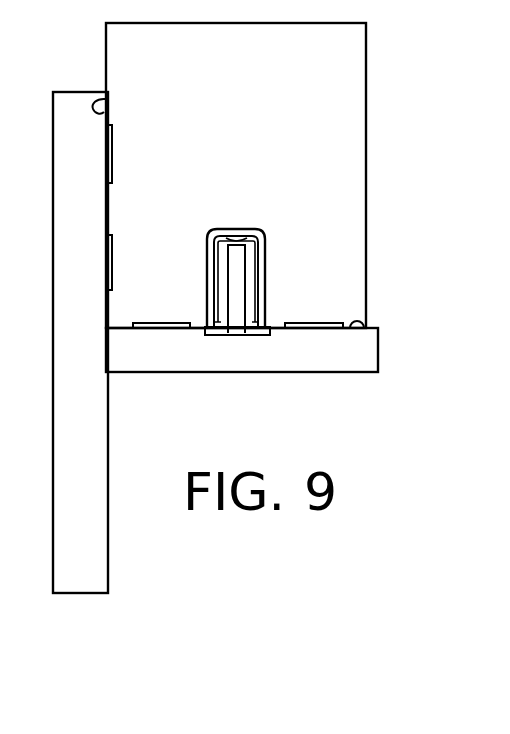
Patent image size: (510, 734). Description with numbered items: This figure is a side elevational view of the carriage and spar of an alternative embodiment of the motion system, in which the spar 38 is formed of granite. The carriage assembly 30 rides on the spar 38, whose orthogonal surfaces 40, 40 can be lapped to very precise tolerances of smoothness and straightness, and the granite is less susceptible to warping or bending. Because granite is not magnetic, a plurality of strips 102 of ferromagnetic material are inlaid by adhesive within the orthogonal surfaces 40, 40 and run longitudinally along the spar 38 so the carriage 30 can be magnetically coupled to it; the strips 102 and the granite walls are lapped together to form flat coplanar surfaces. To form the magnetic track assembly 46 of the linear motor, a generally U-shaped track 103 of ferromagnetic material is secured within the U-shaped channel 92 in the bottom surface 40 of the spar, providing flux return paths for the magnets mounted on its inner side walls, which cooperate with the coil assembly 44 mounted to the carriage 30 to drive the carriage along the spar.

The carriage assembly 30 is at (218, 357).
The spar 38 is at (308, 113).
The orthogonal surface 40 is at (104, 112).
The coil assembly 44 is at (235, 285).
The magnetic track assembly 46 is at (278, 228).
The U-shaped channel 92 is at (208, 285).
The strips of ferromagnetic material 102 is at (112, 172).
The U-shaped track 103 is at (222, 232).